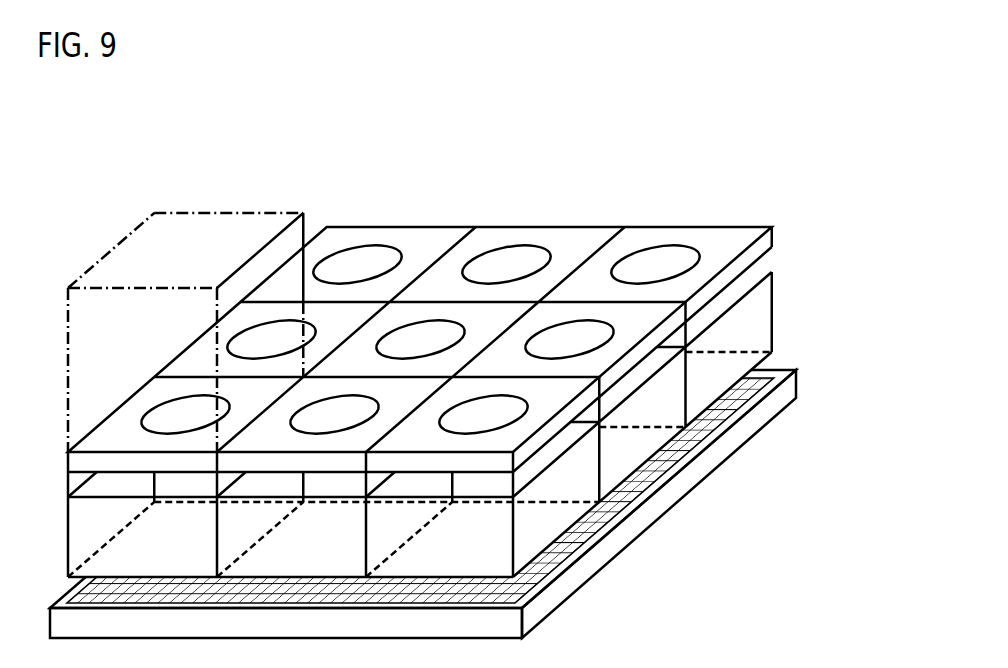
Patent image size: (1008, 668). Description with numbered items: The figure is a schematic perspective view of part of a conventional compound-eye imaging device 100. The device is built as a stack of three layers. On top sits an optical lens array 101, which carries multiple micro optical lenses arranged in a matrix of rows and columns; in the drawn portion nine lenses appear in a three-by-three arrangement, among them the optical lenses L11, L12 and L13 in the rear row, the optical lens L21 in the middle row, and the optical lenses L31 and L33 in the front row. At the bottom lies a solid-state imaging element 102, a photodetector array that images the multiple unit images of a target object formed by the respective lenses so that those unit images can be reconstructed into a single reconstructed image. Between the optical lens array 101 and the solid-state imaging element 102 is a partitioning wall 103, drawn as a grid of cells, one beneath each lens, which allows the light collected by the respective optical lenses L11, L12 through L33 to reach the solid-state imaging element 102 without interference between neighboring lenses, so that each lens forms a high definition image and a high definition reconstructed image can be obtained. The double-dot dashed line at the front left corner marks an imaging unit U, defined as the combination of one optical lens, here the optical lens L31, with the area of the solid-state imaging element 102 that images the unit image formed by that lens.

The compound-eye imaging device 100 is at (567, 89).
The optical lens array 101 is at (455, 403).
The solid-state imaging element 102 is at (738, 432).
The partitioning wall 103 is at (755, 320).
The imaging unit U is at (135, 222).
The optical lens L11 is at (364, 263).
The optical lens L12 is at (513, 263).
The optical lens L13 is at (662, 262).
The optical lens L21 is at (258, 345).
The optical lens L31 is at (158, 413).
The optical lens L33 is at (503, 411).